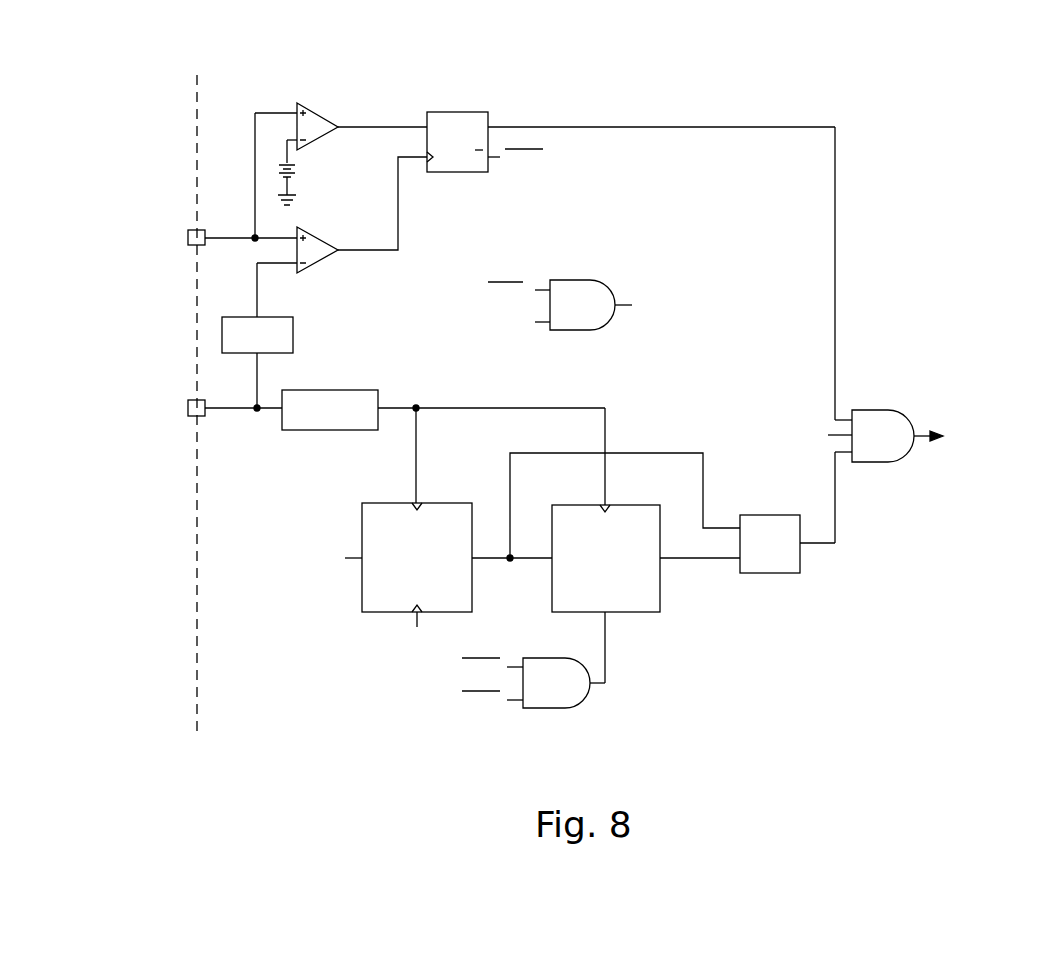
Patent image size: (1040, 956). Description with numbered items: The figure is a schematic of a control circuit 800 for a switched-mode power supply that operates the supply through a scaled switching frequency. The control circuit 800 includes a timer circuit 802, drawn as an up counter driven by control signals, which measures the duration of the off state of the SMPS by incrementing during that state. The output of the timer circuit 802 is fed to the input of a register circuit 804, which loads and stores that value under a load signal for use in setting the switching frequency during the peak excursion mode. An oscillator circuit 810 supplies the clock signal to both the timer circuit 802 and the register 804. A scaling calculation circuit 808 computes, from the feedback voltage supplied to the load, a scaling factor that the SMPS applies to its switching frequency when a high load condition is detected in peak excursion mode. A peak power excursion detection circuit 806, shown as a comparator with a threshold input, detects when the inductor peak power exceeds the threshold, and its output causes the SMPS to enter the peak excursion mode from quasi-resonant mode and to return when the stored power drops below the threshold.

The control circuit 800 is at (675, 68).
The timer circuit 802 is at (376, 600).
The register circuit 804 is at (645, 600).
The peak power excursion detection circuit 806 is at (307, 106).
The scaling calculation circuit 808 is at (222, 340).
The oscillator circuit 810 is at (342, 394).